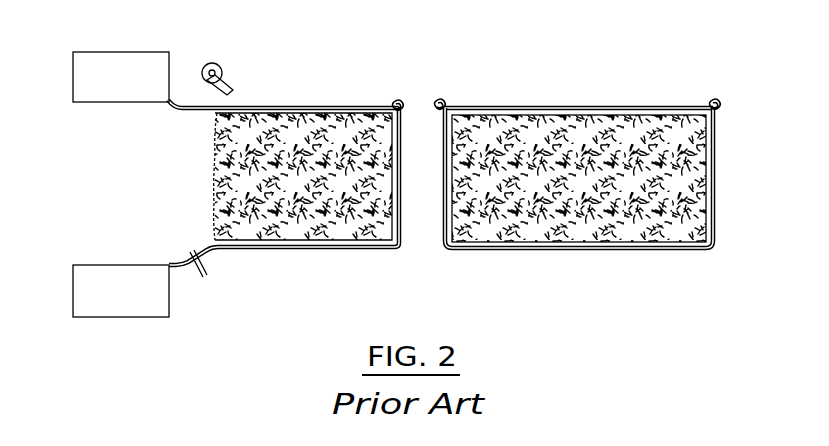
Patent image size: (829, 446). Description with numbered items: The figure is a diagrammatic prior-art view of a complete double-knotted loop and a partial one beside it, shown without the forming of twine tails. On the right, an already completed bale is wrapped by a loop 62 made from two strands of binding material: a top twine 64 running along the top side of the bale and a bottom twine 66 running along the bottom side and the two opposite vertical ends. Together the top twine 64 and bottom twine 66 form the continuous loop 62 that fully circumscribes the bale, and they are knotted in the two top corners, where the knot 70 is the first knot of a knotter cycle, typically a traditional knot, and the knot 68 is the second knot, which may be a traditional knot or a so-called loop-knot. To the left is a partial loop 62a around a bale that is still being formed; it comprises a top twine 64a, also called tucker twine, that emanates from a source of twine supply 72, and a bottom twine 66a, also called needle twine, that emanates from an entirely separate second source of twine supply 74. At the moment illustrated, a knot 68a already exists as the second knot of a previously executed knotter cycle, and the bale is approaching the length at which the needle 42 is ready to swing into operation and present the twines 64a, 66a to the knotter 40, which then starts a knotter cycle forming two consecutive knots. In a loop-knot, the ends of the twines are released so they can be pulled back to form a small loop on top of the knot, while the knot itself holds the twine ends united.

The knotter 40 is at (223, 63).
The needle 42 is at (206, 262).
The loop 62 is at (603, 99).
The partial loop 62a is at (299, 96).
The top twine 64 is at (541, 108).
The top twine 64a is at (246, 106).
The bottom twine 66 is at (573, 249).
The bottom twine 66a is at (297, 249).
The knot 68 is at (712, 101).
The knot 68a is at (394, 102).
The knot 70 is at (447, 101).
The source of twine supply 72 is at (113, 52).
The second source of twine supply 74 is at (113, 265).